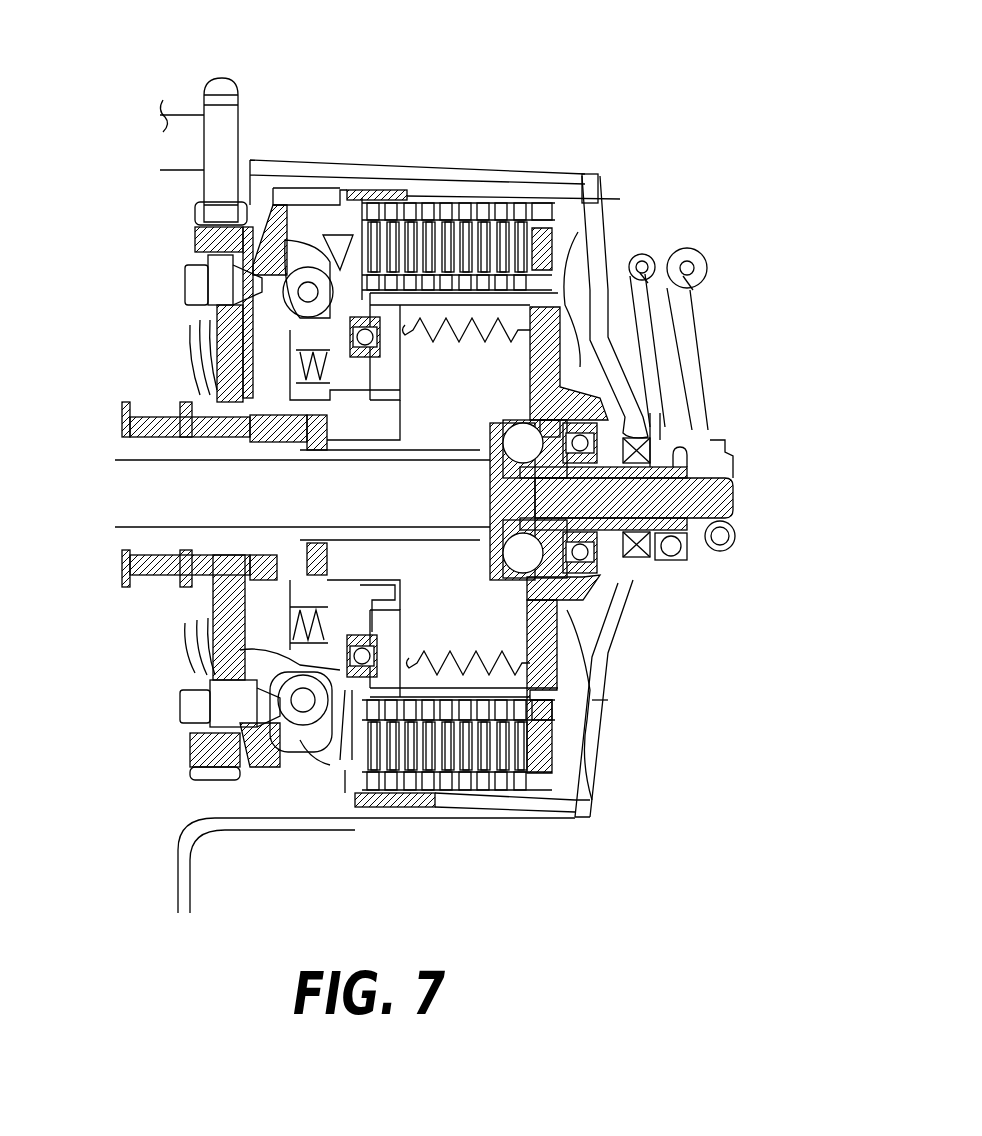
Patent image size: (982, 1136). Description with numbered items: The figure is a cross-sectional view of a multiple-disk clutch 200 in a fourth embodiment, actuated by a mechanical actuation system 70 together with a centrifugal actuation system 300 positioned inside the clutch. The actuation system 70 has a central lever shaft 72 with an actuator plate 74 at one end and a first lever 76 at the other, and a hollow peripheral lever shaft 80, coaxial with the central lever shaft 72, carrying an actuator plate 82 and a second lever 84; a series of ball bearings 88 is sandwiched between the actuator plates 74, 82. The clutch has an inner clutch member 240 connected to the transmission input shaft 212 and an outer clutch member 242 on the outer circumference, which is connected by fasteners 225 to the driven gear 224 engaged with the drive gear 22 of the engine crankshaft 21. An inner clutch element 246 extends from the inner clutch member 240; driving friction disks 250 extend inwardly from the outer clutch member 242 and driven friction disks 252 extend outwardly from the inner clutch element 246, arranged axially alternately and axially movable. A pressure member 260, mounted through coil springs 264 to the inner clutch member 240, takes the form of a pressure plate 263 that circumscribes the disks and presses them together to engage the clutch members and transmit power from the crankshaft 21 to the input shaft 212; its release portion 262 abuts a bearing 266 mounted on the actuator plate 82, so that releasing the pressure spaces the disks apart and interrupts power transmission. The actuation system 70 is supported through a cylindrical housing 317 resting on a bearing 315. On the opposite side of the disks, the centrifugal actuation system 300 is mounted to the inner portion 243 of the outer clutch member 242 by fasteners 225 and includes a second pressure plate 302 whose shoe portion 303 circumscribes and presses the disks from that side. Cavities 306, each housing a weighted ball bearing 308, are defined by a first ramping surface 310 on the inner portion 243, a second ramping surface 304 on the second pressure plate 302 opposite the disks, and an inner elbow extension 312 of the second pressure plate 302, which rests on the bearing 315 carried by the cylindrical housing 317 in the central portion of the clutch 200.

The crankshaft 21 is at (165, 101).
The drive gear 22 is at (221, 76).
The mechanical actuation system 70 is at (715, 363).
The central lever shaft 72 is at (738, 500).
The actuator plate 74 is at (490, 508).
The first lever 76 is at (700, 392).
The peripheral lever shaft 80 is at (700, 422).
The actuator plate 82 is at (548, 608).
The second lever 84 is at (655, 352).
The ball bearings 88 is at (523, 440).
The multiple-disk clutch 200 is at (531, 98).
The transmission input shaft 212 is at (125, 543).
The driven gear 224 is at (195, 228).
The fasteners 225 is at (188, 290).
The inner clutch member 240 is at (398, 352).
The outer clutch member 242 is at (366, 190).
The inner portion 243 is at (270, 230).
The inner clutch element 246 is at (557, 330).
The driving friction disks 250 is at (462, 202).
The driven friction disks 252 is at (522, 160).
The pressure member 260 is at (588, 243).
The release portion 262 is at (600, 594).
The pressure plate 263 is at (598, 200).
The coil springs 264 is at (592, 722).
The bearing 266 is at (598, 548).
The centrifugal actuation system 300 is at (308, 772).
The second pressure plate 302 is at (342, 768).
The shoe portion 303 is at (348, 796).
The second ramping surface 304 is at (190, 768).
The cavities 306 is at (303, 262).
The weighted ball bearing 308 is at (312, 312).
The first ramping surface 310 is at (268, 790).
The inner elbow extension 312 is at (300, 665).
The bearing 315 is at (372, 632).
The cylindrical housing 317 is at (420, 640).